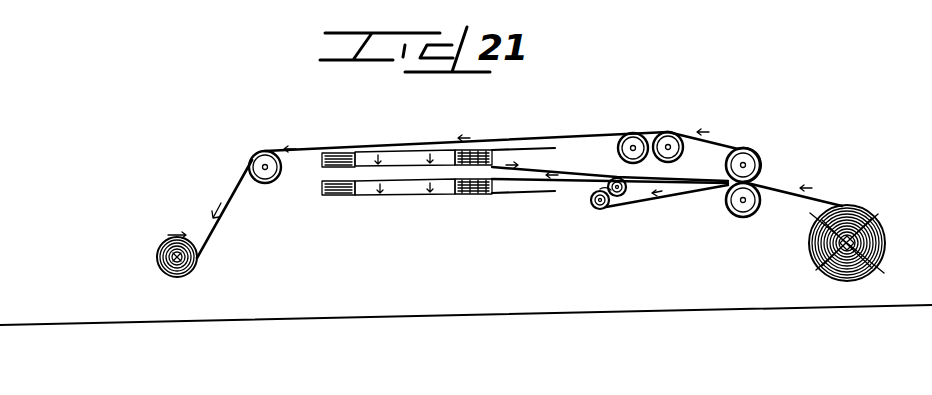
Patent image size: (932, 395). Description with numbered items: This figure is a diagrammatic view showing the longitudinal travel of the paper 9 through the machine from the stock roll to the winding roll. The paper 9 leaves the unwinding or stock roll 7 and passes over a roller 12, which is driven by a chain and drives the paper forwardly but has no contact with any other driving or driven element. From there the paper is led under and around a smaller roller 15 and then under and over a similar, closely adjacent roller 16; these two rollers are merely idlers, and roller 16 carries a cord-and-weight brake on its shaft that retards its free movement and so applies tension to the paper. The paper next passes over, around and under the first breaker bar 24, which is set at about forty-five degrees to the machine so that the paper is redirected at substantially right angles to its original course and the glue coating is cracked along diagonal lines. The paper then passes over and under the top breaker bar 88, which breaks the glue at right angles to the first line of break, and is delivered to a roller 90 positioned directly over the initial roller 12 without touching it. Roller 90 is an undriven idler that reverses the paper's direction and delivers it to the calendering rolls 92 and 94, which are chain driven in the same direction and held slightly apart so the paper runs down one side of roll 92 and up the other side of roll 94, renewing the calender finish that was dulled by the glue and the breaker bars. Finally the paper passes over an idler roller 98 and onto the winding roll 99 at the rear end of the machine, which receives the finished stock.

The stock roll 7 is at (876, 263).
The paper 9 is at (355, 146).
The roller 12 is at (742, 218).
The roller 15 is at (600, 211).
The roller 16 is at (619, 194).
The first breaker bar 24 is at (345, 193).
The top breaker bar 88 is at (332, 153).
The roller 90 is at (747, 146).
The calendering roll 92 is at (673, 134).
The calendering roll 94 is at (618, 151).
The idler roller 98 is at (262, 184).
The winding roll 99 is at (158, 255).